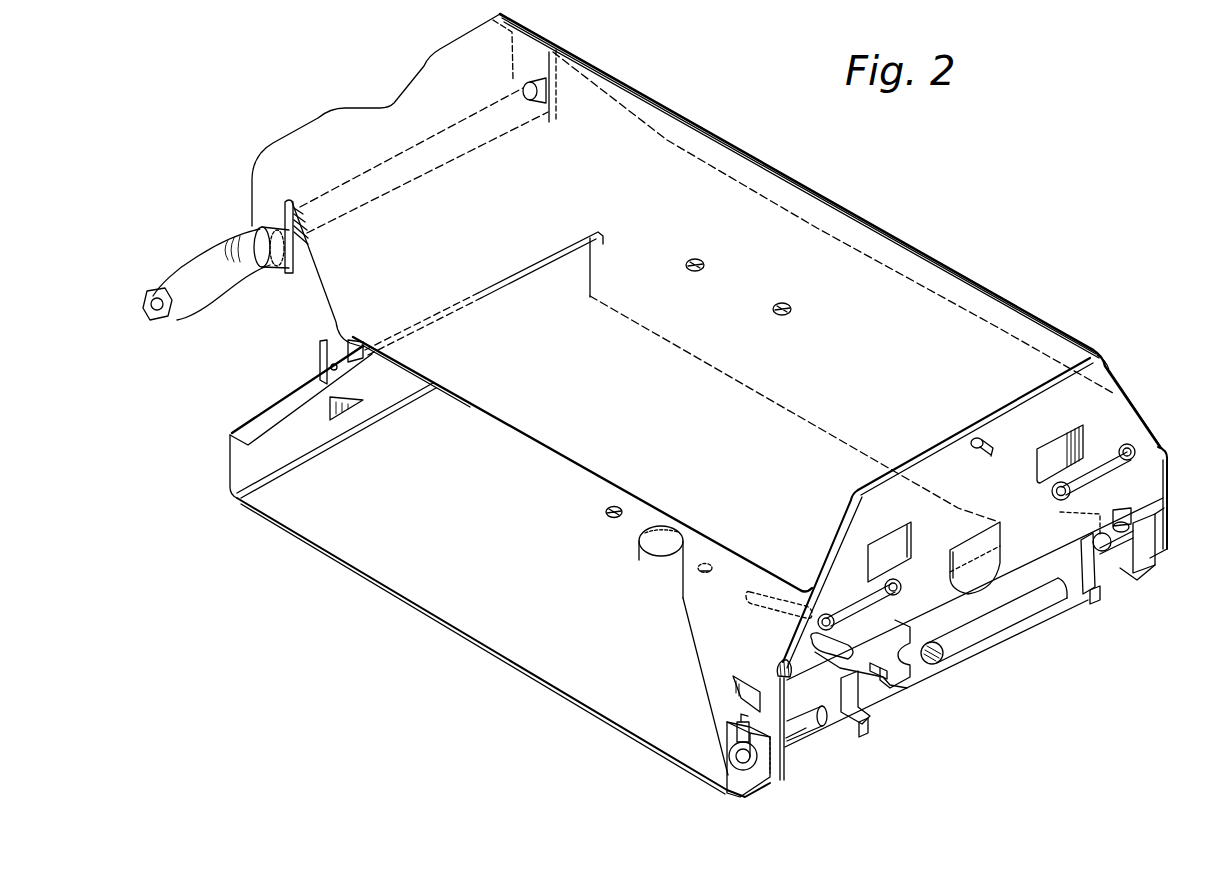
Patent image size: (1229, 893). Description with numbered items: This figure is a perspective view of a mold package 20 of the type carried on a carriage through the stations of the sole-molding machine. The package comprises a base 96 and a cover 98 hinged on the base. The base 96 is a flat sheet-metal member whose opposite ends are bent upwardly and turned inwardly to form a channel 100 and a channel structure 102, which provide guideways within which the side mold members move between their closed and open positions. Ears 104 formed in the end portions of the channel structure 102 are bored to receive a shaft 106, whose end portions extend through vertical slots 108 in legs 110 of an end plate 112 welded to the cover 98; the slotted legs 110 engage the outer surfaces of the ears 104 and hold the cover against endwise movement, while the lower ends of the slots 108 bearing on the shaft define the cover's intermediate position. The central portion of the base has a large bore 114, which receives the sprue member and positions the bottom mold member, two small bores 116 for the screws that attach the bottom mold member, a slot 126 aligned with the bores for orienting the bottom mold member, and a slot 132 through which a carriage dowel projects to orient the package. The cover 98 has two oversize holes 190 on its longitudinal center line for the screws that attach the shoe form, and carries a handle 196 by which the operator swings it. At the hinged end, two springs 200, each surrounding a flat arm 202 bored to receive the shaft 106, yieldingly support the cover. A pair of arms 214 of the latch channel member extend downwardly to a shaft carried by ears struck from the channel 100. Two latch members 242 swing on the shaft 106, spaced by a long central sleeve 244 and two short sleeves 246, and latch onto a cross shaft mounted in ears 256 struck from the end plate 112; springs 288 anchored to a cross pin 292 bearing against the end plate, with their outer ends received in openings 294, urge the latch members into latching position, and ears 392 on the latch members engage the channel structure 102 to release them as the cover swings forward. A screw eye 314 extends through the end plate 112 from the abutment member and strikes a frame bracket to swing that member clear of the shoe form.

The mold package 20 is at (956, 248).
The base 96 is at (428, 605).
The cover 98 is at (668, 132).
The channel 100 is at (240, 472).
The channel structure 102 is at (932, 677).
The ears 104 is at (1137, 568).
The shaft 106 is at (732, 763).
The vertical slots 108 is at (735, 692).
The legs 110 is at (1166, 520).
The end plate 112 is at (933, 468).
The large bore 114 is at (645, 555).
The small bores 116 is at (609, 518).
The slot 126 is at (846, 650).
The slot 132 is at (895, 698).
The holes 190 is at (704, 270).
The handle 196 is at (195, 262).
The springs 200 is at (1125, 516).
The flat arm 202 is at (1152, 554).
The arms 214 is at (327, 360).
The latch members 242 is at (1093, 625).
The long central sleeve 244 is at (1032, 638).
The short sleeves 246 is at (1100, 533).
The ears 256 is at (1058, 446).
The springs 288 is at (1071, 492).
The cross pin 292 is at (1094, 476).
The openings 294 is at (1050, 494).
The screw eye 314 is at (988, 455).
The ears 392 is at (1101, 599).